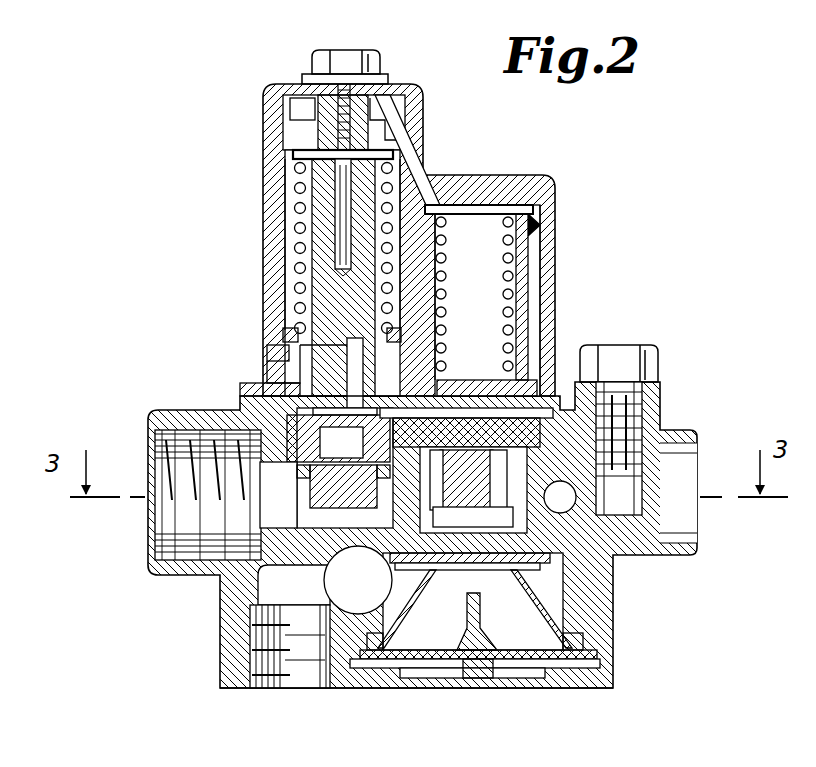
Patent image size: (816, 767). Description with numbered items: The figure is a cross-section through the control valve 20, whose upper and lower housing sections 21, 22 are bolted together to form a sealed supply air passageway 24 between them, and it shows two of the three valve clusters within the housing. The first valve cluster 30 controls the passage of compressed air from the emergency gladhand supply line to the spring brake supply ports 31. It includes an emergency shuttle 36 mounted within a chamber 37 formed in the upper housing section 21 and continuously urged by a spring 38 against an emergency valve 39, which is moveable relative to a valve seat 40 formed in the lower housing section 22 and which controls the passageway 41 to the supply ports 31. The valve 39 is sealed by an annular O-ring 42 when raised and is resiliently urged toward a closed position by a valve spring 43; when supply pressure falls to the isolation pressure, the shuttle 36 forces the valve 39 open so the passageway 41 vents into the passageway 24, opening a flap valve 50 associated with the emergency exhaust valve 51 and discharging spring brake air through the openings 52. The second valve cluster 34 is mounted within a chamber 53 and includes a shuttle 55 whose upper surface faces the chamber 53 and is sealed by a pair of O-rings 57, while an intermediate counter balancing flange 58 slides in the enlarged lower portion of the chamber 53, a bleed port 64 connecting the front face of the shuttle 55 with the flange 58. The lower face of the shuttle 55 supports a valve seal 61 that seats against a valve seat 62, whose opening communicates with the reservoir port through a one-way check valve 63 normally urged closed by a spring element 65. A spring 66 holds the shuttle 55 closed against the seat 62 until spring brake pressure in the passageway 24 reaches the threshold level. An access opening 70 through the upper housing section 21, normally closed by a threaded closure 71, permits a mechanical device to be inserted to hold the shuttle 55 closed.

The control valve 20 is at (196, 598).
The upper housing section 21 is at (263, 170).
The lower housing section 22 is at (165, 408).
The supply air passageway 24 is at (452, 330).
The first valve cluster 30 is at (532, 272).
The spring brake supply ports 31 is at (278, 688).
The second valve cluster 34 is at (292, 212).
The emergency shuttle 36 is at (545, 246).
The chamber 37 is at (483, 196).
The spring 38 is at (552, 202).
The emergency valve 39 is at (462, 297).
The valve seat 40 is at (538, 446).
The passageway 41 is at (475, 553).
The annular O-ring 42 is at (514, 480).
The valve spring 43 is at (550, 509).
The flap valve 50 is at (358, 580).
The emergency exhaust valve 51 is at (508, 692).
The openings 52 is at (455, 572).
The chamber 53 is at (396, 136).
The shuttle 55 is at (300, 243).
The O-rings 57 is at (290, 333).
The counter balancing flange 58 is at (270, 352).
The valve seal 61 is at (350, 374).
The valve seat 62 is at (340, 468).
The one-way check valve 63 is at (300, 496).
The bleed port 64 is at (343, 277).
The spring element 65 is at (294, 585).
The spring 66 is at (293, 154).
The access opening 70 is at (322, 108).
The threaded closure 71 is at (344, 62).